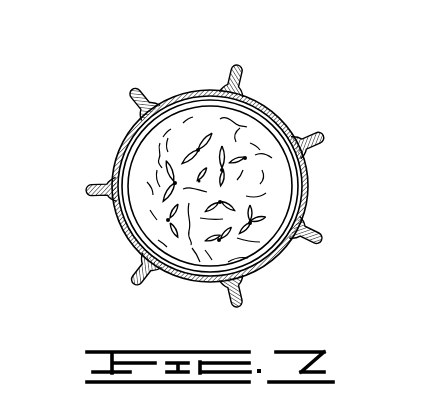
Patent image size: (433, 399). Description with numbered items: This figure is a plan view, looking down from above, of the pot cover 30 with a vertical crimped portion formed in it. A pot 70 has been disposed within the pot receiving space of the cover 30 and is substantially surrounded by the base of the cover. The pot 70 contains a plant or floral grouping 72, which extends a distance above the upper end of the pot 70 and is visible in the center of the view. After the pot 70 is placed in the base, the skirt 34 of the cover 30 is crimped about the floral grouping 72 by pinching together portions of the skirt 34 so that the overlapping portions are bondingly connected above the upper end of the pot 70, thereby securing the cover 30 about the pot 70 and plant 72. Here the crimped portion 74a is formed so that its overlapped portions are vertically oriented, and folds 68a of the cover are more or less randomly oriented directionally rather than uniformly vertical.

The cover 30 is at (110, 47).
The skirt 34 is at (125, 137).
The pot 70 is at (199, 90).
The crimped portion 74a is at (241, 68).
The folds 68a is at (322, 144).
The floral grouping 72 is at (228, 181).